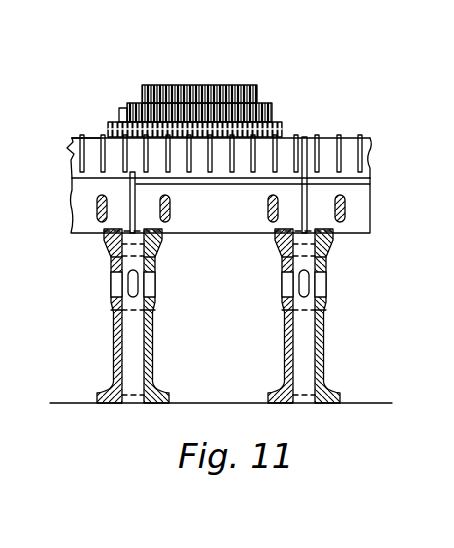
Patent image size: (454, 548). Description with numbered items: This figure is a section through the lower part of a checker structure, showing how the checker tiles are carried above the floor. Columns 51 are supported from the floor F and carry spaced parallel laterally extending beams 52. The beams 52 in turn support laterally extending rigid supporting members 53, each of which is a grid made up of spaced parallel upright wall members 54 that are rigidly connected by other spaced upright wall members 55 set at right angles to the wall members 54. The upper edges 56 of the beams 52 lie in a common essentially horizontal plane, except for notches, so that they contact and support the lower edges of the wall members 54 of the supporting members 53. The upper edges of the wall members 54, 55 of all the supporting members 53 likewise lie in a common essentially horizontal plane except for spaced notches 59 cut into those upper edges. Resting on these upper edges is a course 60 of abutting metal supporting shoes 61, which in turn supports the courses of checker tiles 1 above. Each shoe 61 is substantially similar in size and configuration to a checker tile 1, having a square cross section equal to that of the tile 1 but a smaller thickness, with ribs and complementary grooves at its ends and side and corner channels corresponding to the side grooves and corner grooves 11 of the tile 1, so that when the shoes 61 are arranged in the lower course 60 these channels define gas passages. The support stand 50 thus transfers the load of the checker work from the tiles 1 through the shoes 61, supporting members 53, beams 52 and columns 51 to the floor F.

The checker tile 1 is at (238, 86).
The corner grooves 11 is at (270, 111).
The support stand 50 is at (202, 316).
The columns 51 is at (113, 336).
The beams 52 is at (363, 217).
The supporting members 53 is at (73, 155).
The upright wall members 54 is at (308, 137).
The upright wall members 55 is at (348, 150).
The upper edges 56 is at (372, 193).
The notches 59 is at (91, 137).
The course 60 is at (118, 114).
The supporting shoes 61 is at (103, 124).
The floor F is at (367, 402).